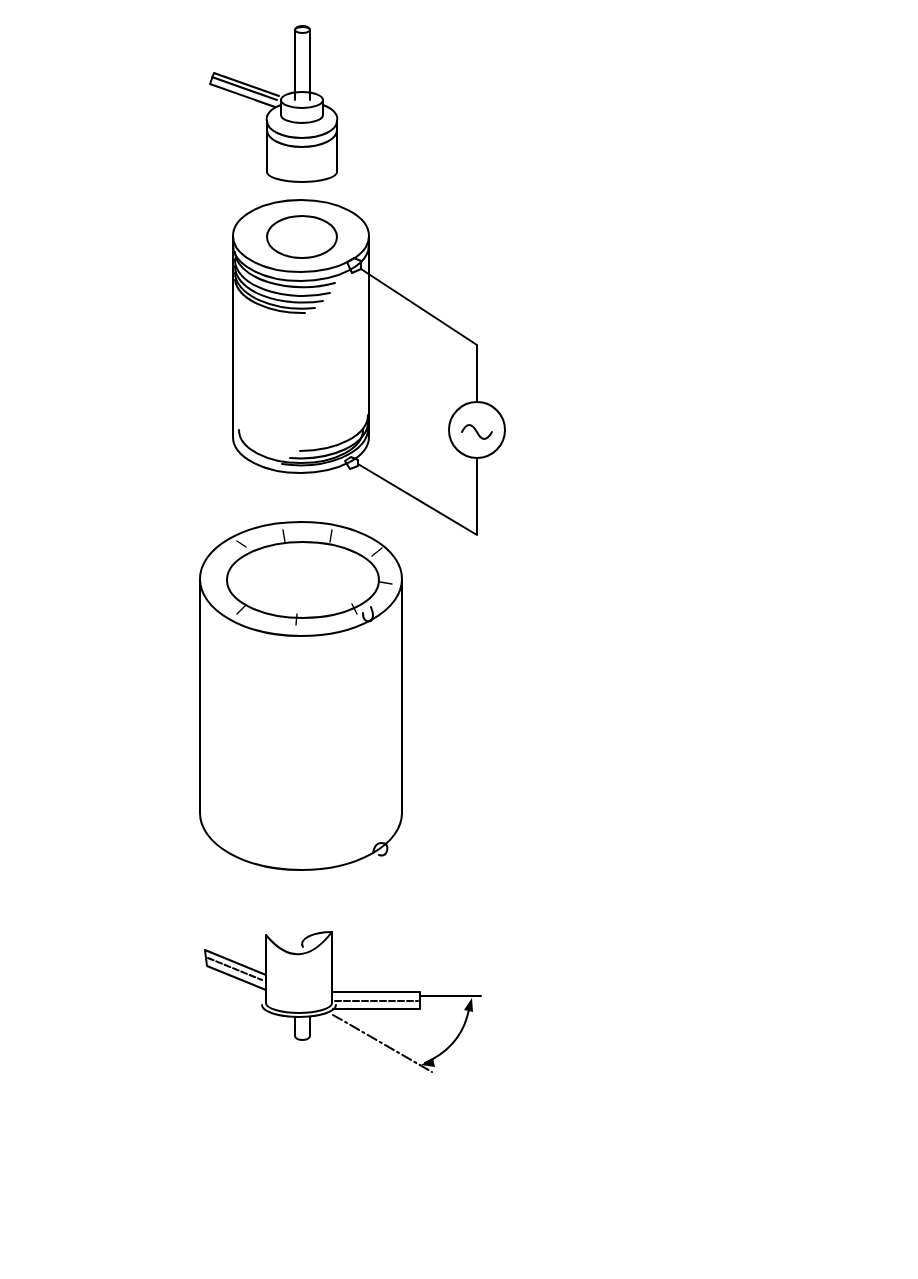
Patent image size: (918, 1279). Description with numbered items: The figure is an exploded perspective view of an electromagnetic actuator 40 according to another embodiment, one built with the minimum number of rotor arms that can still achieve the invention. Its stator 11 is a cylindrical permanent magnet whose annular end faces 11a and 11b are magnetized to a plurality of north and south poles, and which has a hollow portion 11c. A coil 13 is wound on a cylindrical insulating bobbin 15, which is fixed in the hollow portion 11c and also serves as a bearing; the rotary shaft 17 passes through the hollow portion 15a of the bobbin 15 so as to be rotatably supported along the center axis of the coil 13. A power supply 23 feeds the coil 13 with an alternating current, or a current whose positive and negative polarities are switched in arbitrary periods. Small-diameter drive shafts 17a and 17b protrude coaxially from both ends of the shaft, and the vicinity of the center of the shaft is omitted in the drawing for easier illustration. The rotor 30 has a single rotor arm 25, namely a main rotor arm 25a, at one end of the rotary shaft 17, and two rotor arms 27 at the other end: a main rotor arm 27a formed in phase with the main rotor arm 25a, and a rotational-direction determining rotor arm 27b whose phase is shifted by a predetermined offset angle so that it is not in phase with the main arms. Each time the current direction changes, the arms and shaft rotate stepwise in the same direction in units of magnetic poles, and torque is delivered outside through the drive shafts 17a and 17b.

The electromagnetic actuator 40 is at (509, 119).
The rotor 30 is at (350, 116).
The rotary shaft 17 is at (346, 175).
The drive shaft 17a is at (311, 76).
The drive shaft 17b is at (295, 1030).
The rotor arm 25 is at (226, 109).
The main rotor arm 25a is at (226, 75).
The bobbin 15 is at (355, 236).
The hollow portion 15a is at (278, 237).
The coil 13 is at (240, 286).
The power supply 23 is at (507, 433).
The stator 11 is at (210, 722).
The annular end face 11a is at (200, 574).
The annular end face 11b is at (393, 843).
The hollow portion 11c is at (255, 568).
The rotor arms 27 is at (224, 979).
The main rotor arm 27a is at (222, 956).
The rotational-direction determining rotor arm 27b is at (397, 994).